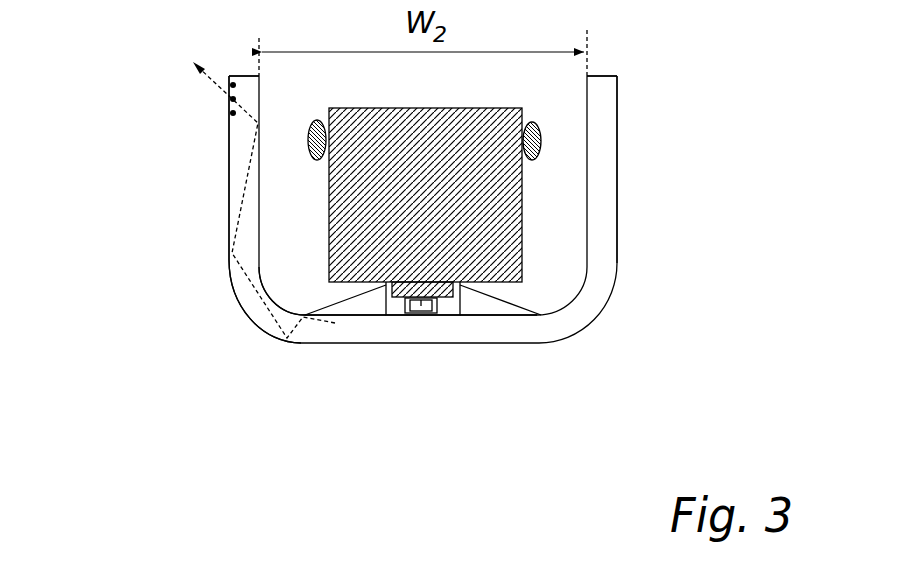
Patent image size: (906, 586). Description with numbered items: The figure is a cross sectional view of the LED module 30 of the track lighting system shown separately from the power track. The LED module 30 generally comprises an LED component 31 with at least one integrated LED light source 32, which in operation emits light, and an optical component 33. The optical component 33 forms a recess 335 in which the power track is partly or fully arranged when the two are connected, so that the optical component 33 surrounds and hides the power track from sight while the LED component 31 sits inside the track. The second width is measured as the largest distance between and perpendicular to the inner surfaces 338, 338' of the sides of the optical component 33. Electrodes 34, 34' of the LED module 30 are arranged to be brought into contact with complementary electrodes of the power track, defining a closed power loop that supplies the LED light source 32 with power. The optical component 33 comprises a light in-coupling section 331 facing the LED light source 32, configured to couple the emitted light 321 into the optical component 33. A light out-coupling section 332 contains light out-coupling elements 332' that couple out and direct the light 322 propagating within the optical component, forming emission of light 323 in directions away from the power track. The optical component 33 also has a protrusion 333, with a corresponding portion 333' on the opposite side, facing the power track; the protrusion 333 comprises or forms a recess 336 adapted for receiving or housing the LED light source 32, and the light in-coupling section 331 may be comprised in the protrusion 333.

The LED module 30 is at (68, 96).
The LED component 31 is at (495, 240).
The LED light source 32 is at (421, 314).
The light 321 is at (408, 313).
The light 322 is at (300, 265).
The emission of light 323 is at (220, 88).
The optical component 33 is at (602, 137).
The light in-coupling section 331 is at (386, 315).
The light out-coupling section 332 is at (432, 208).
The light out-coupling elements 332' is at (166, 135).
The protrusion 333 is at (293, 347).
The inclined surface 333' is at (535, 341).
The recess 335 is at (268, 282).
The recess 336 is at (448, 307).
The inner surface 338 is at (298, 86).
The inner surface 338' is at (551, 83).
The electrode 34 is at (241, 175).
The electrode 34' is at (621, 190).